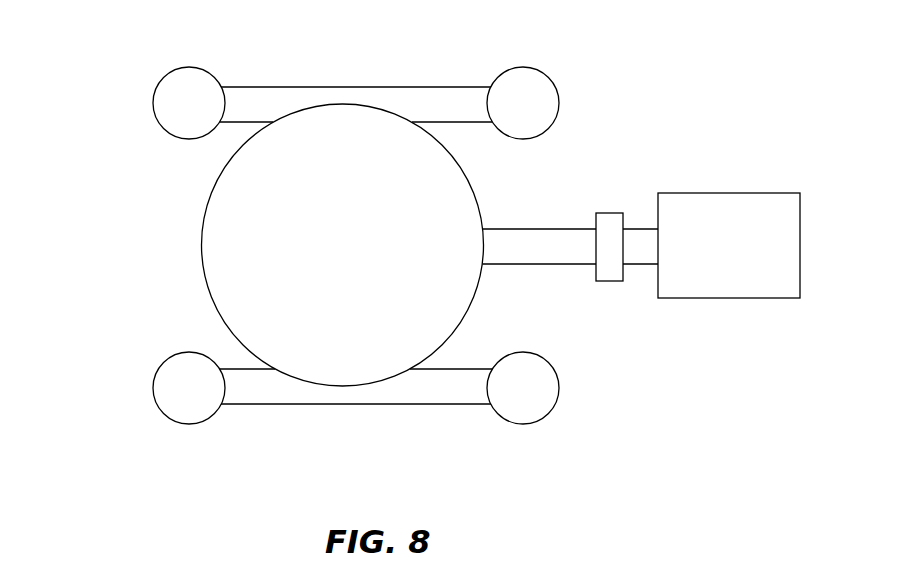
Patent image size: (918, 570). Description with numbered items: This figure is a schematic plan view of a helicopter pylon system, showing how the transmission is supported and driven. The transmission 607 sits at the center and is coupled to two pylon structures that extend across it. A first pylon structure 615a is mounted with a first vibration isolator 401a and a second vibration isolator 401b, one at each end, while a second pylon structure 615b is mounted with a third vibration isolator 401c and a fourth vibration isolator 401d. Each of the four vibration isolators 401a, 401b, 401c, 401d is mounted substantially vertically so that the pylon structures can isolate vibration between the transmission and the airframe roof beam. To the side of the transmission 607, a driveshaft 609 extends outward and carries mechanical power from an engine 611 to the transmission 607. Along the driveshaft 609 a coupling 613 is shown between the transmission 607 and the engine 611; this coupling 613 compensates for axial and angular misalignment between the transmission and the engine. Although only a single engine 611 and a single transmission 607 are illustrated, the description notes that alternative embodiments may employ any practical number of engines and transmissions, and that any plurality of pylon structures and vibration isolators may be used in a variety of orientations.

The transmission 607 is at (202, 240).
The first vibration isolator 401a is at (552, 409).
The second vibration isolator 401b is at (155, 401).
The third vibration isolator 401c is at (553, 78).
The fourth vibration isolator 401d is at (158, 82).
The first pylon structure 615a is at (338, 404).
The second pylon structure 615b is at (360, 87).
The driveshaft 609 is at (508, 229).
The coupling 613 is at (608, 281).
The engine 611 is at (693, 193).